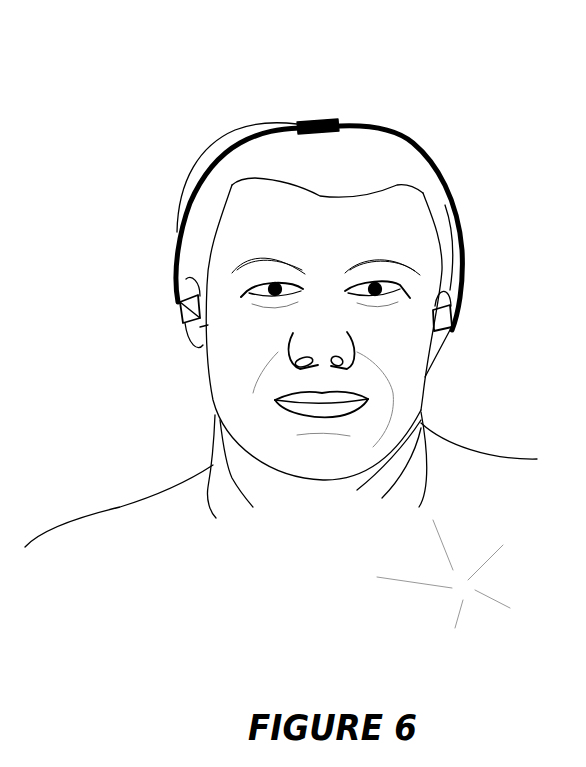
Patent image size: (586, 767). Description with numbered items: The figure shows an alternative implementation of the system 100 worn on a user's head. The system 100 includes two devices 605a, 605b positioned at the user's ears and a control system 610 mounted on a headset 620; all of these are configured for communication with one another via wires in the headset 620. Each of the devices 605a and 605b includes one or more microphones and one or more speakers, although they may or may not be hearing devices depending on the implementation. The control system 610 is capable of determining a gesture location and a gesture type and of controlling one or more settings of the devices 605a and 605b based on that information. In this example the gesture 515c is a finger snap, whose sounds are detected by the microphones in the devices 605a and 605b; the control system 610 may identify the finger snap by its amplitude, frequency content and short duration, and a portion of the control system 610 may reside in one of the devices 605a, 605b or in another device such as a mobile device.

The system 100 is at (208, 46).
The control system 610 is at (300, 121).
The headset 620 is at (363, 120).
The device 605a is at (185, 323).
The device 605b is at (437, 332).
The gesture 515c is at (449, 610).